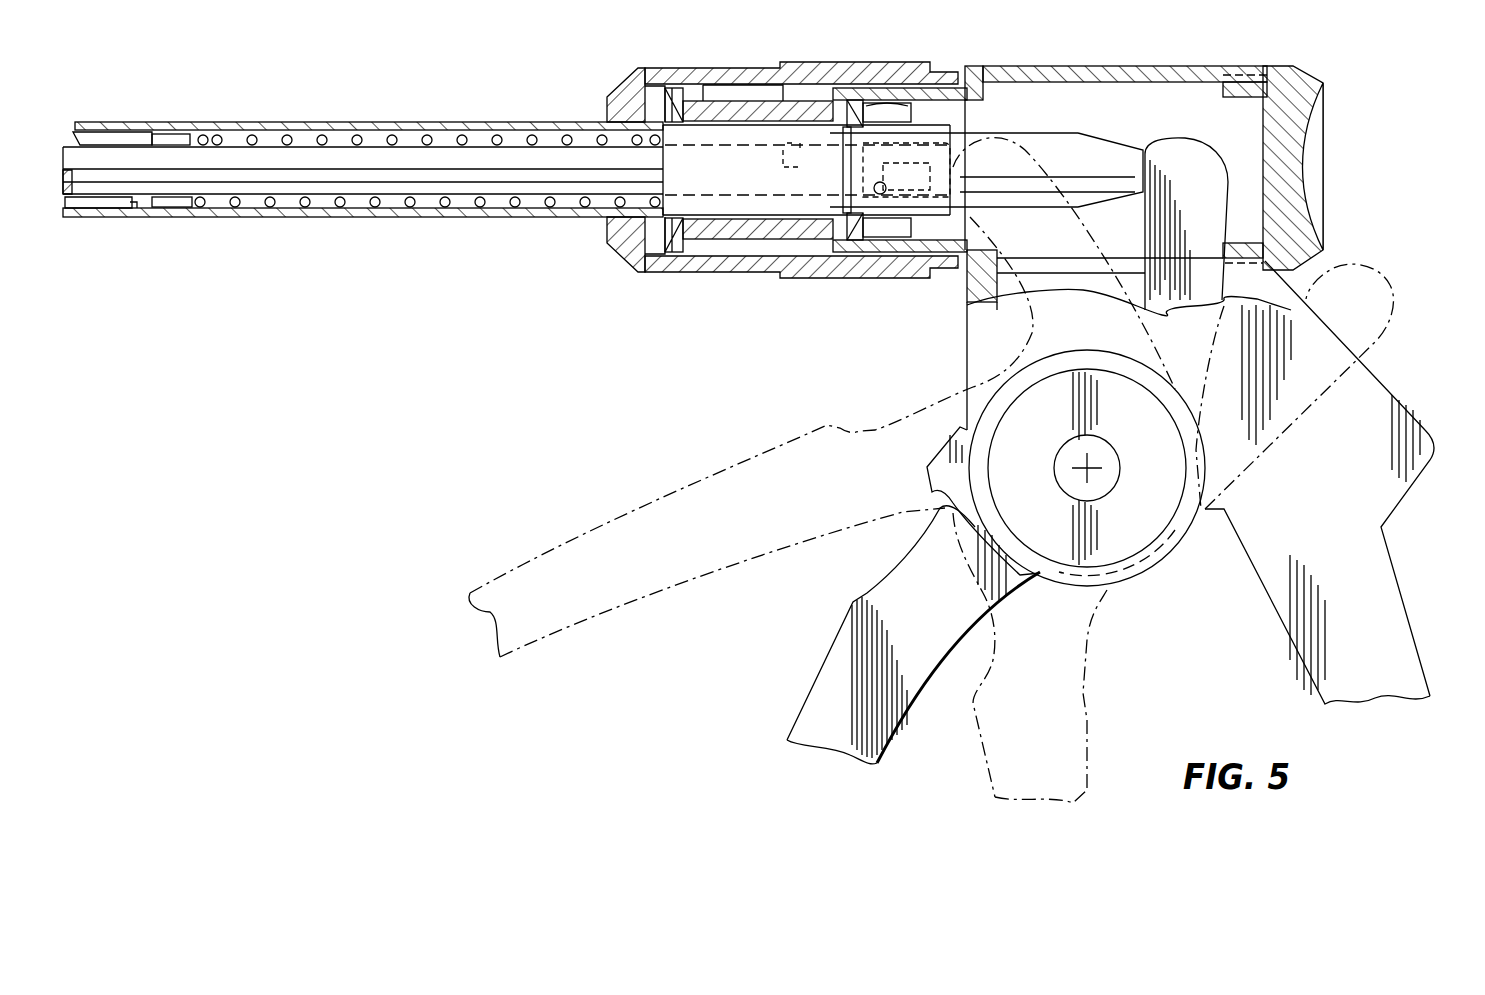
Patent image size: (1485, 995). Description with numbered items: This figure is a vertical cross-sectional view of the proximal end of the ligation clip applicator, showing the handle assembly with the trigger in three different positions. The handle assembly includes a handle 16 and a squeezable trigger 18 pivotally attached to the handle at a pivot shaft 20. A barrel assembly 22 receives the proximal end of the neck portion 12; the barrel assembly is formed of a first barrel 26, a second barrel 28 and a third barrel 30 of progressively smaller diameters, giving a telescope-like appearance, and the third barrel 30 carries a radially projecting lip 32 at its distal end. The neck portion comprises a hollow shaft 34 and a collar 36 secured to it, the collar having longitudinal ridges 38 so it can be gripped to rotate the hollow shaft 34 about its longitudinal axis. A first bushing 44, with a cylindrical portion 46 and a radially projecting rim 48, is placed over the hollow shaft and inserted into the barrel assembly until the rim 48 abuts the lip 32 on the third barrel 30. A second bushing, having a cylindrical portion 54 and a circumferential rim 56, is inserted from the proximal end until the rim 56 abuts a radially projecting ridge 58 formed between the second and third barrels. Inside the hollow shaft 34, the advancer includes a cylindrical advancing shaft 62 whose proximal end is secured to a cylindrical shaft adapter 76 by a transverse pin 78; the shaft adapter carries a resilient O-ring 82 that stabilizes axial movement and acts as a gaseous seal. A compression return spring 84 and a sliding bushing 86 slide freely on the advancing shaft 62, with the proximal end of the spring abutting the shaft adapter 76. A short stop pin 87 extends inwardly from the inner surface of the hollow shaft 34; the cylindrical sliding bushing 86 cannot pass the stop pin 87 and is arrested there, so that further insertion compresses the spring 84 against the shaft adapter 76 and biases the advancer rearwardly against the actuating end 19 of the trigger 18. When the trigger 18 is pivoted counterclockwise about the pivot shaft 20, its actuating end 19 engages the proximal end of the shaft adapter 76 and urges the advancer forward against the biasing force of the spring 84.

The neck portion 12 is at (571, 240).
The handle 16 is at (1405, 612).
The squeezable trigger 18 is at (735, 567).
The actuating end 19 is at (1172, 138).
The pivot shaft 20 is at (1118, 475).
The barrel assembly 22 is at (1068, 64).
The first barrel 26 is at (972, 66).
The second barrel 28 is at (840, 268).
The third barrel 30 is at (768, 272).
The lip 32 is at (695, 268).
The hollow shaft 34 is at (546, 122).
The collar 36 is at (728, 68).
The longitudinal ridges 38 is at (848, 68).
The first bushing 44 is at (652, 96).
The cylindrical portion 46 is at (722, 262).
The rim 48 is at (668, 267).
The cylindrical portion 54 is at (792, 118).
The circumferential rim 56 is at (912, 108).
The ridge 58 is at (832, 105).
The advancing shaft 62 is at (538, 217).
The shaft adapter 76 is at (663, 164).
The transverse pin 78 is at (740, 170).
The O-ring 82 is at (803, 180).
The compression return spring 84 is at (470, 135).
The sliding bushing 86 is at (197, 135).
The stop pin 87 is at (135, 210).